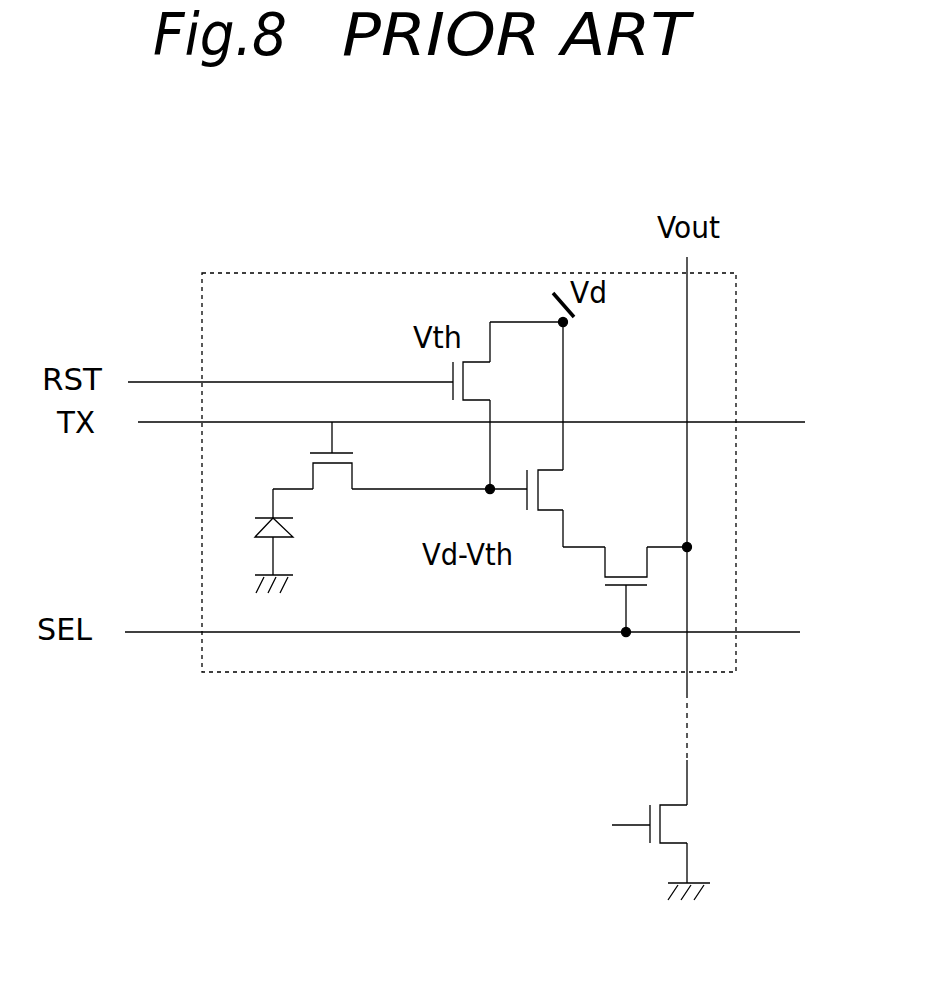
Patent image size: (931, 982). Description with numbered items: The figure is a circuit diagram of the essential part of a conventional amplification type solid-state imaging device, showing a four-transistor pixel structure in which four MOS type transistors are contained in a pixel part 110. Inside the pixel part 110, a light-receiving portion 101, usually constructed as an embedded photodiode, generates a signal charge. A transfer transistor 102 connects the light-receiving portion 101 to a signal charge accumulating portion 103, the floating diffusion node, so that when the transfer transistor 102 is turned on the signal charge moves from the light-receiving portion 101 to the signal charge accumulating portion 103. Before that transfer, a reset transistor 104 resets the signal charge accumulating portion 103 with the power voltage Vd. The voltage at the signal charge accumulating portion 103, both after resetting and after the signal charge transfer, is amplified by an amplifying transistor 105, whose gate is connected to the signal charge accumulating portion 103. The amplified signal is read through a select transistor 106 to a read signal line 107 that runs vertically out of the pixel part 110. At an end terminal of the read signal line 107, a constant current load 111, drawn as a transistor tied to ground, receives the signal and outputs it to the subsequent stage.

The light-receiving portion 101 is at (263, 515).
The transfer transistor 102 is at (333, 478).
The signal charge accumulating portion 103 is at (490, 489).
The reset transistor 104 is at (476, 383).
The amplifying transistor 105 is at (556, 490).
The select transistor 106 is at (625, 565).
The read signal line 107 is at (687, 480).
The pixel part 110 is at (460, 275).
The constant current load 111 is at (683, 825).